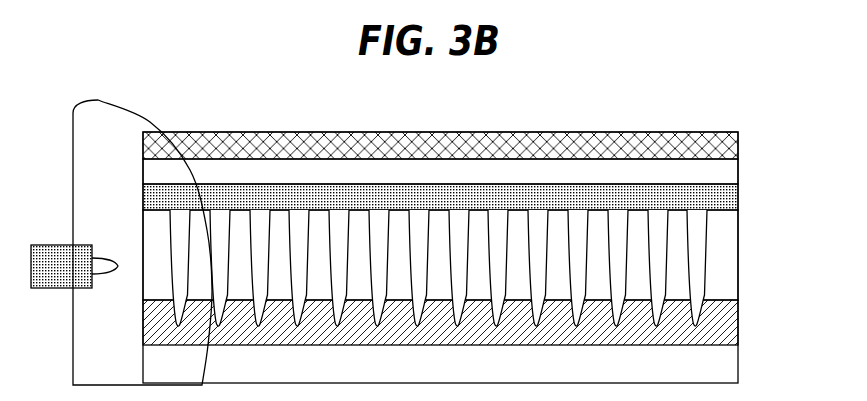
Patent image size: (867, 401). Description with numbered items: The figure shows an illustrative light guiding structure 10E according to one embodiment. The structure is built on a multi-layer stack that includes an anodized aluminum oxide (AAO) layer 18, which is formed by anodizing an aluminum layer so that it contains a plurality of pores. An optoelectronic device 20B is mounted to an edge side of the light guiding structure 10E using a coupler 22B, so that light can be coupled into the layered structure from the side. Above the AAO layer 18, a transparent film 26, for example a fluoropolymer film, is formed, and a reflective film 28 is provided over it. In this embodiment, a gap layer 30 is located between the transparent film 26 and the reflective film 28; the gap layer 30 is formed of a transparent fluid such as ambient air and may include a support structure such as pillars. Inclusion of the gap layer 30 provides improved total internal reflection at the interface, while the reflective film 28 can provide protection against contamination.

The light guiding structure 10E is at (698, 117).
The anodized aluminum oxide (AAO) layer 18 is at (756, 258).
The optoelectronic device 20B is at (62, 250).
The coupler 22B is at (120, 126).
The transparent film 26 is at (737, 197).
The reflective film 28 is at (740, 143).
The gap layer 30 is at (733, 168).